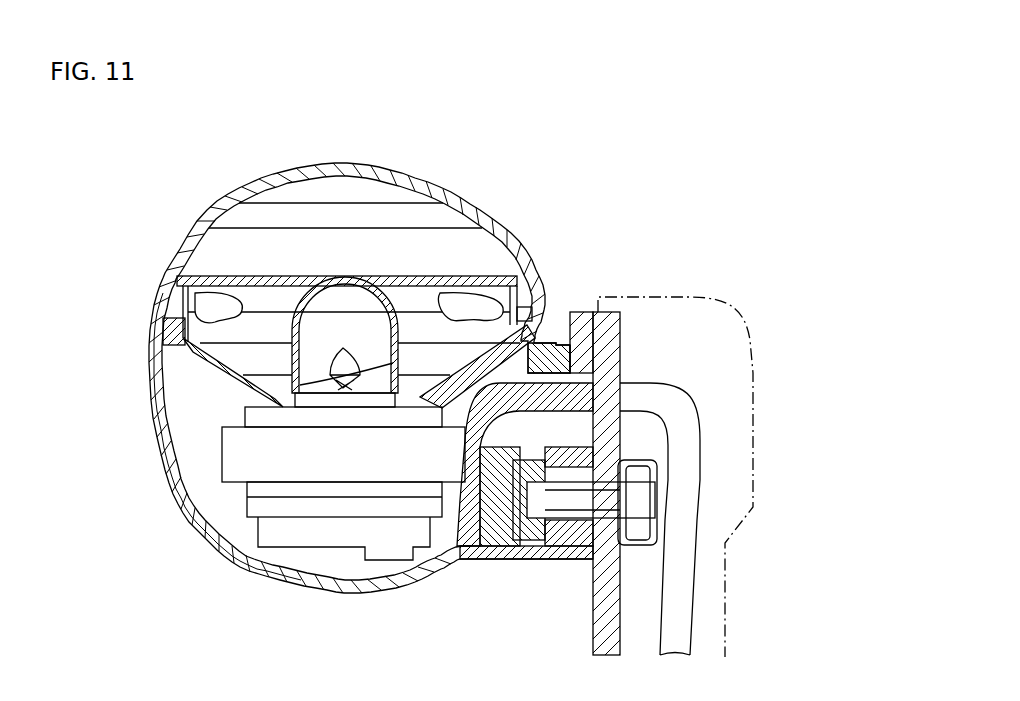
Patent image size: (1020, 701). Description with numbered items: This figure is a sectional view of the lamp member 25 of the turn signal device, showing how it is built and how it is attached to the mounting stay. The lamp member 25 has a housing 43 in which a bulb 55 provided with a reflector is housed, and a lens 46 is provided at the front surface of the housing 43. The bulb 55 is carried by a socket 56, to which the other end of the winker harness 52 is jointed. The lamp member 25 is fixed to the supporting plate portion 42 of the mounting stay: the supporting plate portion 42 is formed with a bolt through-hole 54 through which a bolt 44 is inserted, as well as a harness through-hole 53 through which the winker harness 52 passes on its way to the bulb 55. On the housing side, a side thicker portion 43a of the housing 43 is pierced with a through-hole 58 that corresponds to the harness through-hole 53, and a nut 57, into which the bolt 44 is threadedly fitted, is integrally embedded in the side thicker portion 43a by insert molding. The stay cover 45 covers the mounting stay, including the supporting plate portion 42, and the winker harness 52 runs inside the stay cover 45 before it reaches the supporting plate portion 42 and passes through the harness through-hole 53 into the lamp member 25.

The lamp member 25 is at (433, 177).
The supporting plate portion 42 is at (603, 613).
The housing 43 is at (195, 527).
The side thicker portion 43a is at (553, 550).
The bolt 44 is at (640, 497).
The stay cover 45 is at (753, 377).
The lens 46 is at (492, 207).
The winker harness 52 is at (683, 583).
The harness through-hole 53 is at (640, 388).
The bolt through-hole 54 is at (635, 470).
The bulb 55 is at (320, 278).
The socket 56 is at (323, 550).
The nut 57 is at (510, 520).
The through-hole 58 is at (608, 388).